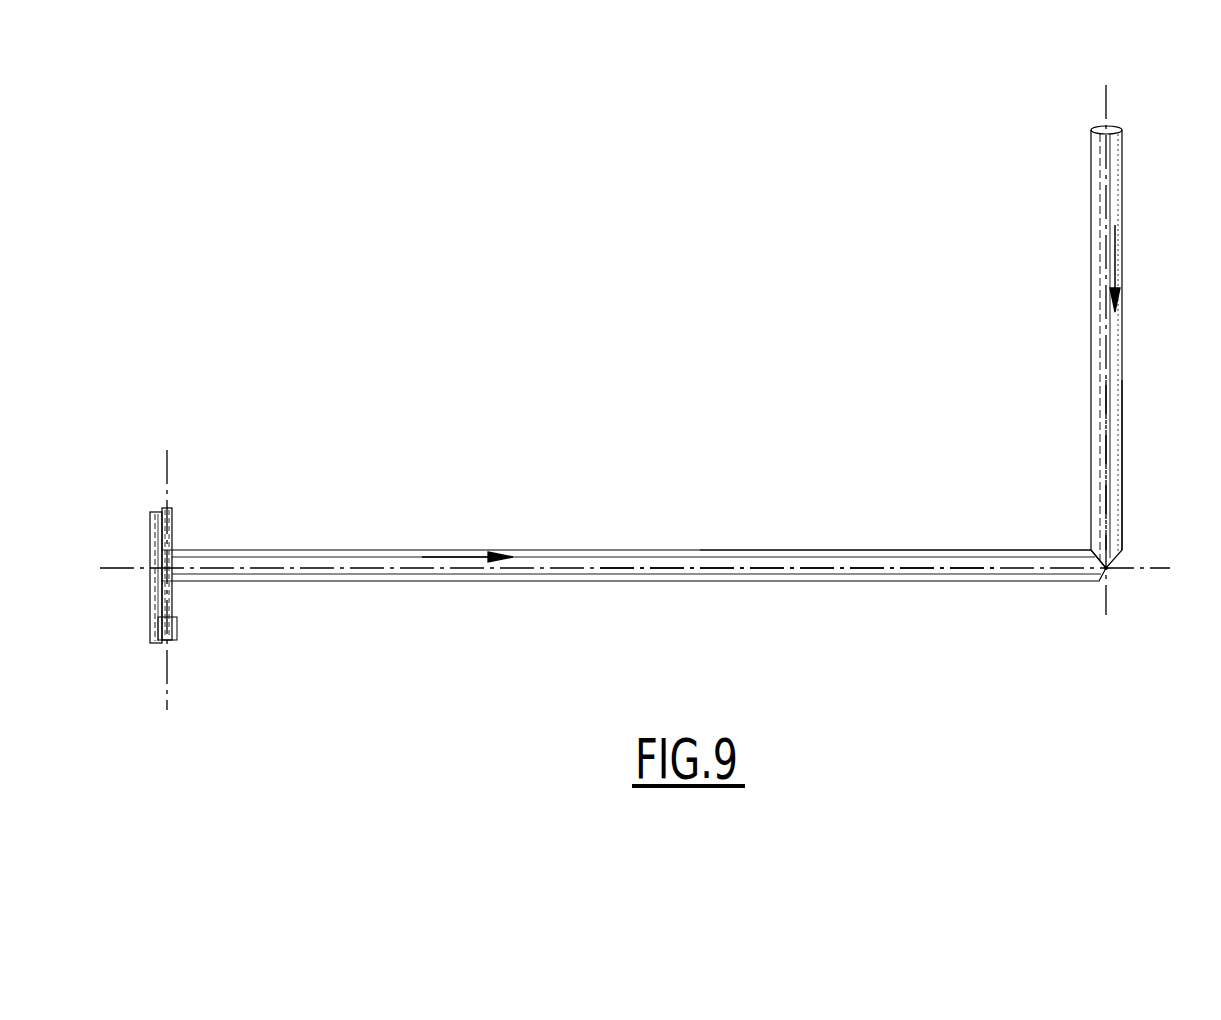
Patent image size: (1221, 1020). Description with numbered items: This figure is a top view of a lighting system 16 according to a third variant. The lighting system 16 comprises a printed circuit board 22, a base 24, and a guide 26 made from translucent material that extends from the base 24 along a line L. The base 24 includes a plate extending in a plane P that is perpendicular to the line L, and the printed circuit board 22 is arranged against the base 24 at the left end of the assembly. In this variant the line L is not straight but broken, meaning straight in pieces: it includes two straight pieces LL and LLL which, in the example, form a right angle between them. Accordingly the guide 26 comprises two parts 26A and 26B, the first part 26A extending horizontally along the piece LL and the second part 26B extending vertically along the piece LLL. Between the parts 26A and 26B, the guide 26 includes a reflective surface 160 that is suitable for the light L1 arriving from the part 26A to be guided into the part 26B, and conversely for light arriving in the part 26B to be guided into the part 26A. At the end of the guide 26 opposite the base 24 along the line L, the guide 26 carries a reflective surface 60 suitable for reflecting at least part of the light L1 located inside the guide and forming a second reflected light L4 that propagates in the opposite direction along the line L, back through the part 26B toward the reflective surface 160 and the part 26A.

The lighting system 16 is at (445, 301).
The printed circuit board 22 is at (152, 540).
The base 24 is at (170, 537).
The guide 26 is at (645, 550).
The first part of the guide 26A is at (913, 550).
The second part of the guide 26B is at (1120, 452).
The reflective surface 60 is at (1112, 127).
The reflective surface 160 is at (1107, 570).
The plane P is at (167, 692).
The line L is at (1106, 101).
The light L1 is at (465, 553).
The second reflected light L4 is at (1115, 263).
The first straight piece of the line LL is at (793, 568).
The second straight piece of the line LLL is at (1107, 390).